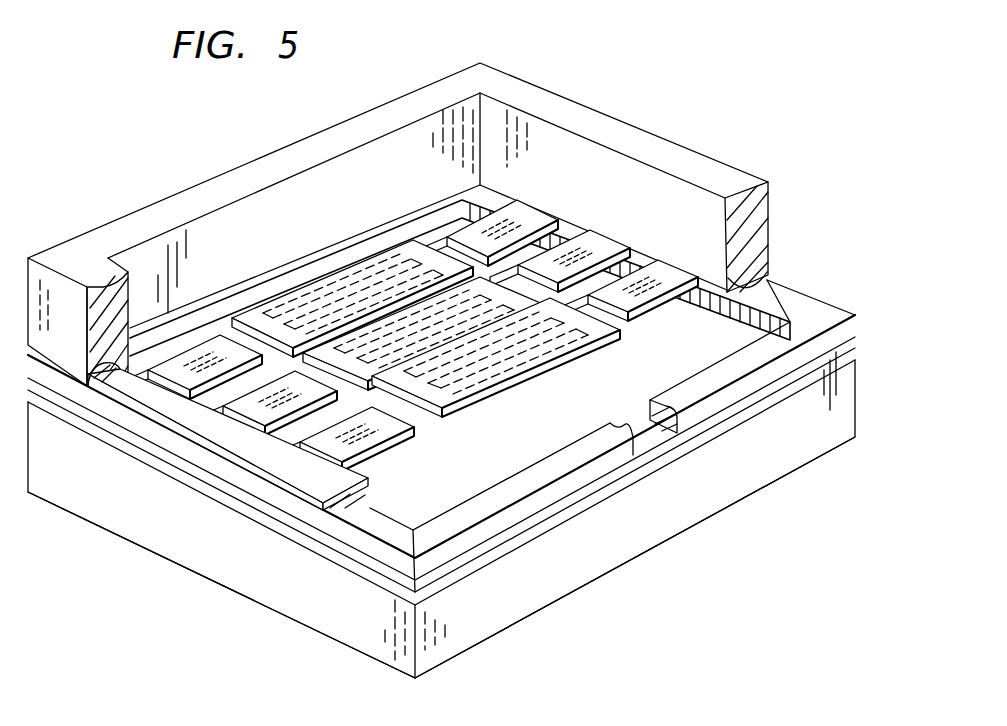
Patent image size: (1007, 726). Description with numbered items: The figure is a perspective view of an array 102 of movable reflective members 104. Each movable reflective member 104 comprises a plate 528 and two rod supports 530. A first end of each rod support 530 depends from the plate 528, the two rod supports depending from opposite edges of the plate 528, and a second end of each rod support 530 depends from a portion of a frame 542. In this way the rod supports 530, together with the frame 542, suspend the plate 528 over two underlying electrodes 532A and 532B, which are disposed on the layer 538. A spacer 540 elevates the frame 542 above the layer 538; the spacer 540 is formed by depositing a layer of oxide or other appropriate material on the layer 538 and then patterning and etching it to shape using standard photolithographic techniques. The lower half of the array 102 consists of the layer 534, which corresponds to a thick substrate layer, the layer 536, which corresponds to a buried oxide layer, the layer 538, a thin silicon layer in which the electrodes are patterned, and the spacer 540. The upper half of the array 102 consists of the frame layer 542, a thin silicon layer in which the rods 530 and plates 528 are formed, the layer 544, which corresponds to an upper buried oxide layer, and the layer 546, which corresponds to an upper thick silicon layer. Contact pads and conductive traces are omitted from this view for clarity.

The array 102 is at (616, 62).
The movable reflective member 104 is at (458, 462).
The plate 528 is at (519, 384).
The rod support 530 is at (607, 317).
The electrode 532A is at (500, 395).
The electrode 532B is at (430, 395).
The layer 534 is at (516, 611).
The layer 536 is at (600, 500).
The layer 538 is at (250, 505).
The spacer 540 is at (800, 300).
The frame 542 is at (157, 408).
The layer 544 is at (643, 243).
The layer 546 is at (649, 146).